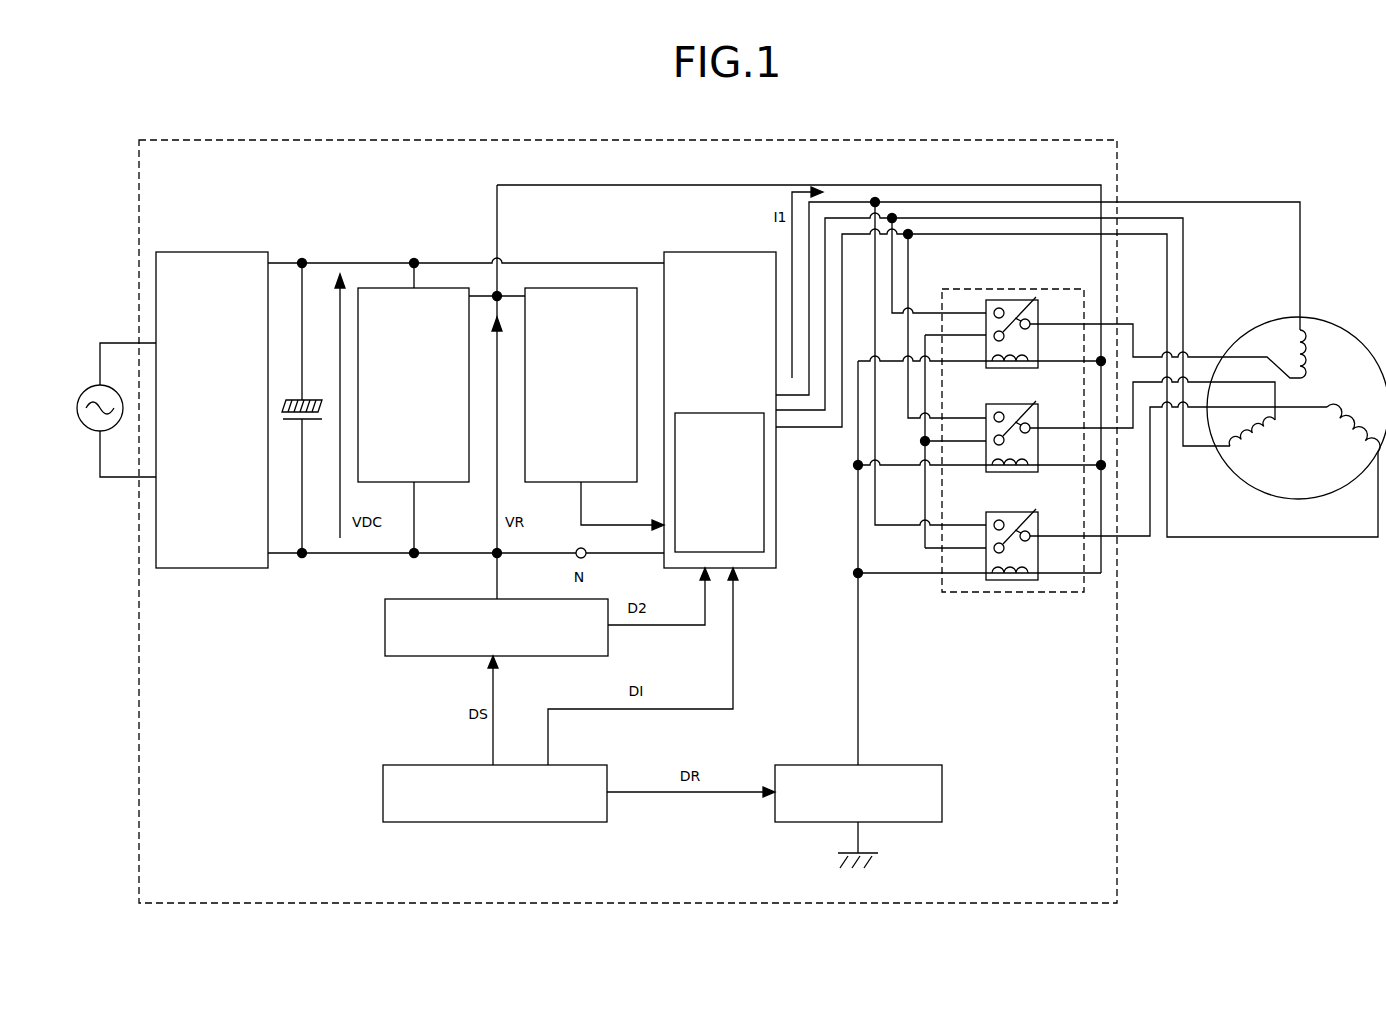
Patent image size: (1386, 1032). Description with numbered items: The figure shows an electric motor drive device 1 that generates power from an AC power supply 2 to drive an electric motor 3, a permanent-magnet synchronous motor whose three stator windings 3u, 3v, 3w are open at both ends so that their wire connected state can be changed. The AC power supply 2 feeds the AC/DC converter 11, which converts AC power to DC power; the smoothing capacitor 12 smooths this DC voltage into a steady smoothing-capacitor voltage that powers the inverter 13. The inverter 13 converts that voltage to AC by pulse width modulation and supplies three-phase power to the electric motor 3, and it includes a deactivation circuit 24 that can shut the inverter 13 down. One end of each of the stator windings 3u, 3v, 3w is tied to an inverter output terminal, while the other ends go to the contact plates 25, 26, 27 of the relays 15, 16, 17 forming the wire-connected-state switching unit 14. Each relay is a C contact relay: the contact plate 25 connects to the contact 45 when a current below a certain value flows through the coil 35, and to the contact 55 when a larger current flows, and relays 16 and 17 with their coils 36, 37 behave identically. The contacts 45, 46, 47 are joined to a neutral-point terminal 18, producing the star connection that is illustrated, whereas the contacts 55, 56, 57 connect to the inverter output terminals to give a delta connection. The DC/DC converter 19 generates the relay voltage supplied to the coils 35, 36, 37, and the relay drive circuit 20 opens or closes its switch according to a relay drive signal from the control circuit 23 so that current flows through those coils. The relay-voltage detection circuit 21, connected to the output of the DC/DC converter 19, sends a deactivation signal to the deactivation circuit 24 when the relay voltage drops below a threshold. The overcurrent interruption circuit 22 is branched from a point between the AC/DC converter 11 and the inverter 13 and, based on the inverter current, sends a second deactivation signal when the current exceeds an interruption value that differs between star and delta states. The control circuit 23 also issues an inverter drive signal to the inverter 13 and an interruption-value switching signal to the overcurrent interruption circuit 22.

The electric motor drive device 1 is at (1081, 140).
The AC power supply 2 is at (89, 385).
The electric motor 3 is at (1296, 392).
The stator winding 3u is at (1312, 360).
The stator winding 3v is at (1255, 438).
The stator winding 3w is at (1340, 446).
The AC/DC converter 11 is at (211, 252).
The smoothing capacitor 12 is at (315, 421).
The inverter 13 is at (718, 252).
The wire-connected-state switching unit 14 is at (1013, 593).
The relay 15 is at (1013, 316).
The relay 16 is at (1013, 420).
The relay 17 is at (1013, 528).
The neutral-point terminal 18 is at (920, 442).
The DC/DC converter 19 is at (455, 484).
The relay drive circuit 20 is at (898, 765).
The relay-voltage detection circuit 21 is at (557, 484).
The overcurrent interruption circuit 22 is at (385, 624).
The control circuit 23 is at (383, 792).
The deactivation circuit 24 is at (718, 413).
The contact plate 25 is at (1037, 297).
The contact plate 26 is at (1037, 401).
The contact plate 27 is at (1037, 509).
The coil 35 is at (1020, 354).
The coil 36 is at (1020, 458).
The coil 37 is at (1020, 566).
The contact 45 is at (986, 342).
The contact 46 is at (986, 446).
The contact 47 is at (986, 554).
The contact 55 is at (995, 307).
The contact 56 is at (995, 411).
The contact 57 is at (995, 519).